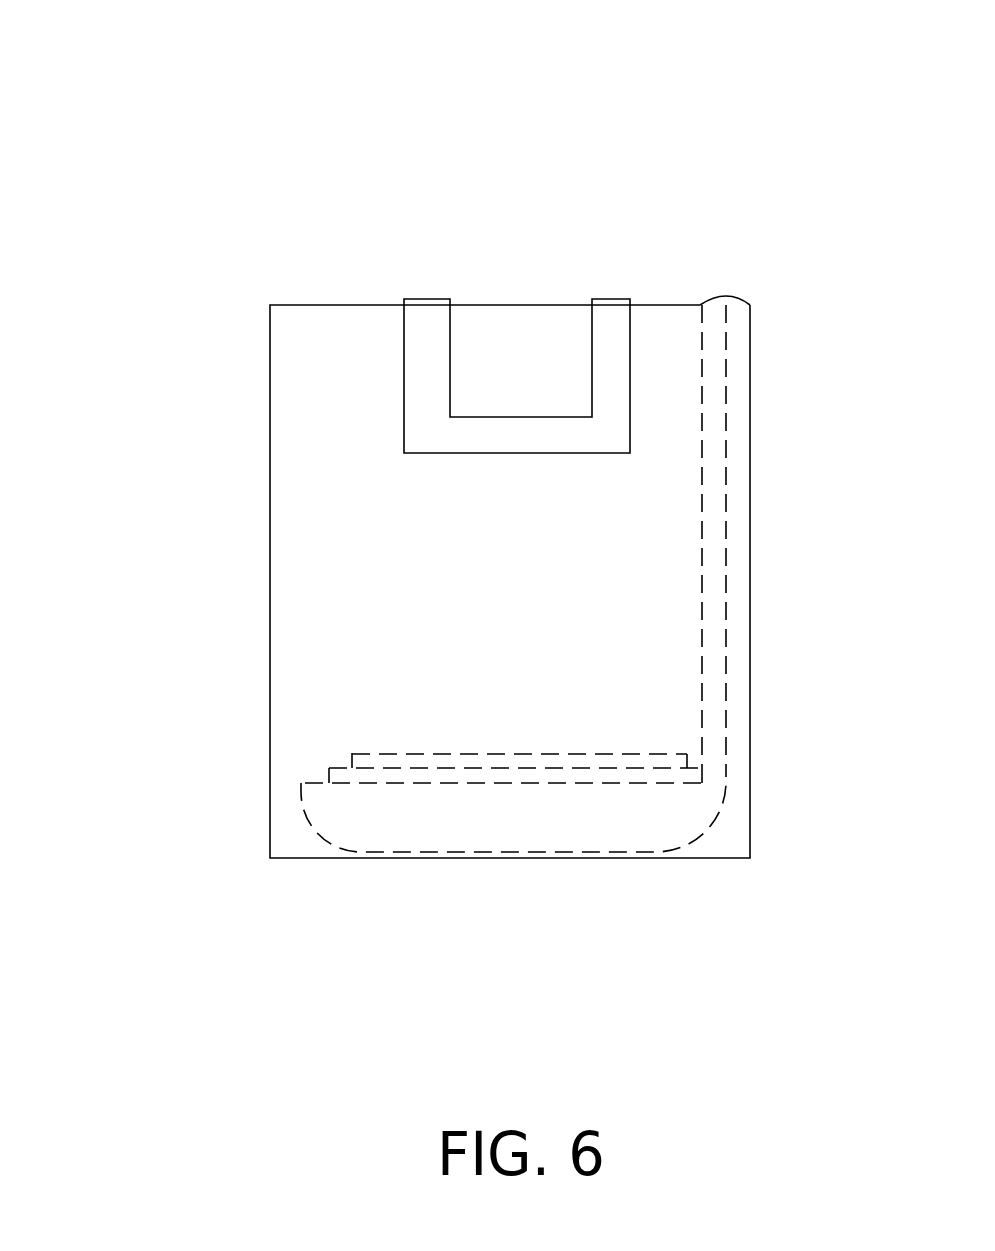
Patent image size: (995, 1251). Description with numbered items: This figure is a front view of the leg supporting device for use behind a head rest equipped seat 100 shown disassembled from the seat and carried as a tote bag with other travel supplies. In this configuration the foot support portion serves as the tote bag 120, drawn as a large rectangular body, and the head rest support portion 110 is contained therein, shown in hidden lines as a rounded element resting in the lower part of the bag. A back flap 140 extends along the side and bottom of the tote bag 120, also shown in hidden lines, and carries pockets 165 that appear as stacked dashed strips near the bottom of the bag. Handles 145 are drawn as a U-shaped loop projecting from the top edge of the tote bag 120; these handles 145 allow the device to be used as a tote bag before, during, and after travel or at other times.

The leg supporting device for use behind a head rest equipped seat 100 is at (247, 130).
The head rest support portion 110 is at (618, 821).
The tote bag 120 is at (322, 513).
The back flap 140 is at (713, 528).
The handles 145 is at (620, 317).
The pockets 165 is at (372, 766).